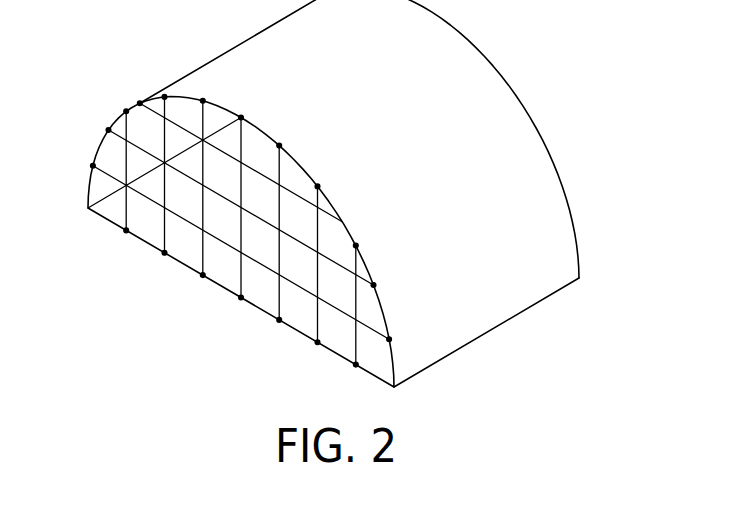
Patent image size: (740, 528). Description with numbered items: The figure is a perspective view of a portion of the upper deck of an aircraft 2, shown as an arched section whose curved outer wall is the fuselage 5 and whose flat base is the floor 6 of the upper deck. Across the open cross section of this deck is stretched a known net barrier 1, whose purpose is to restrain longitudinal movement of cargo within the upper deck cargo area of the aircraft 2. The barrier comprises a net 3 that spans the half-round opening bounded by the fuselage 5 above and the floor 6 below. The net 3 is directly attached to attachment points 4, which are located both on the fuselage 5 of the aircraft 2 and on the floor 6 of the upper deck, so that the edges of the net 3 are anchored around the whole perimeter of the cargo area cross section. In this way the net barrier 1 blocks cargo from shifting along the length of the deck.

The net barrier 1 is at (84, 183).
The aircraft 2 is at (533, 111).
The net 3 is at (164, 240).
The attachment points 4 is at (203, 279).
The fuselage 5 is at (553, 223).
The floor 6 is at (340, 345).